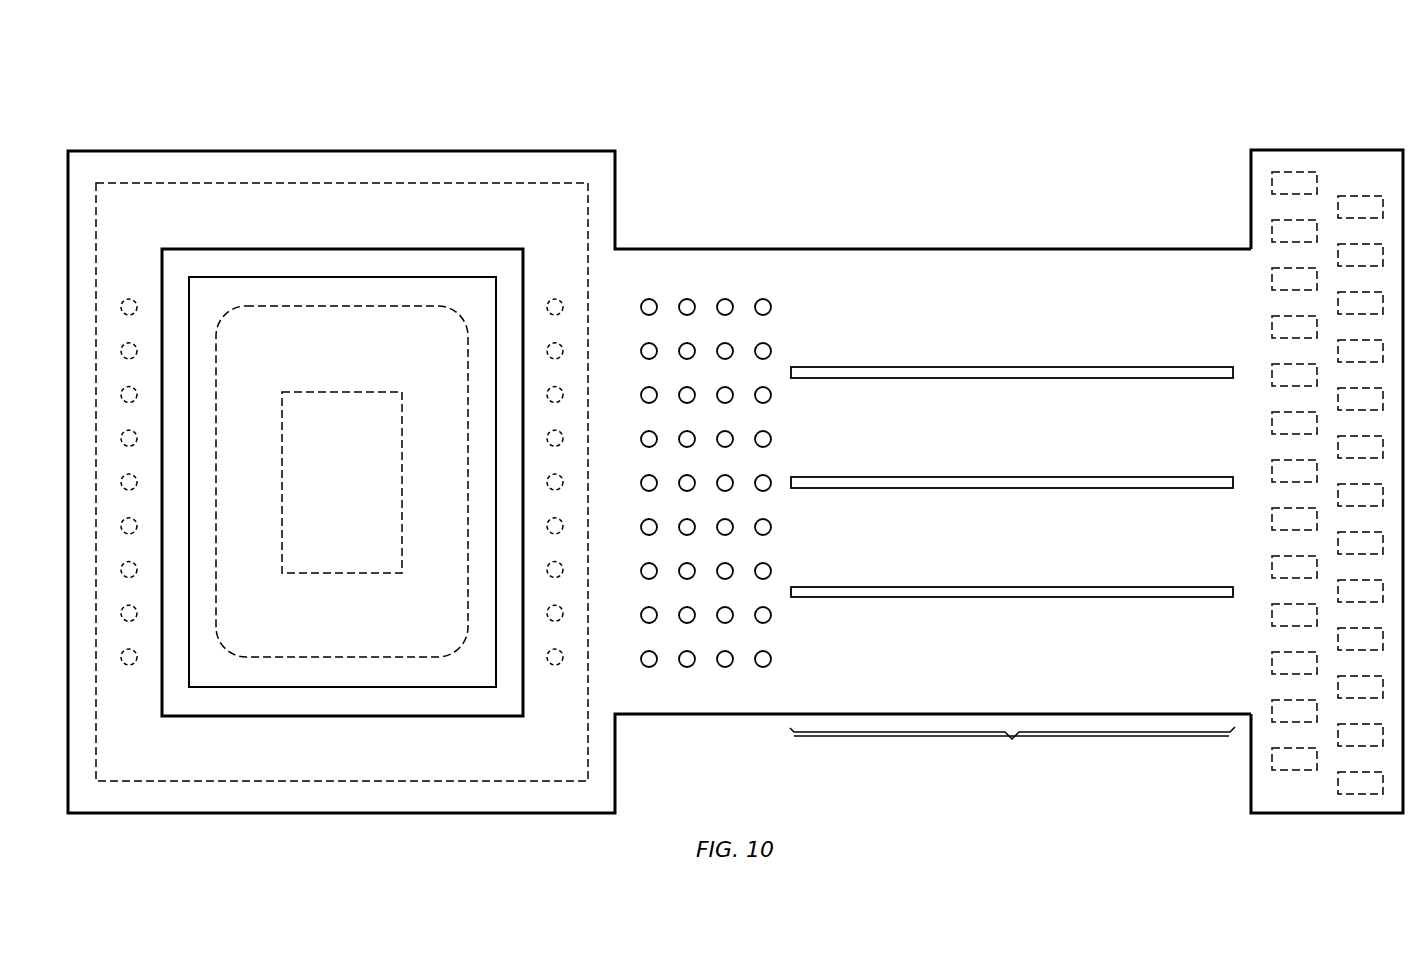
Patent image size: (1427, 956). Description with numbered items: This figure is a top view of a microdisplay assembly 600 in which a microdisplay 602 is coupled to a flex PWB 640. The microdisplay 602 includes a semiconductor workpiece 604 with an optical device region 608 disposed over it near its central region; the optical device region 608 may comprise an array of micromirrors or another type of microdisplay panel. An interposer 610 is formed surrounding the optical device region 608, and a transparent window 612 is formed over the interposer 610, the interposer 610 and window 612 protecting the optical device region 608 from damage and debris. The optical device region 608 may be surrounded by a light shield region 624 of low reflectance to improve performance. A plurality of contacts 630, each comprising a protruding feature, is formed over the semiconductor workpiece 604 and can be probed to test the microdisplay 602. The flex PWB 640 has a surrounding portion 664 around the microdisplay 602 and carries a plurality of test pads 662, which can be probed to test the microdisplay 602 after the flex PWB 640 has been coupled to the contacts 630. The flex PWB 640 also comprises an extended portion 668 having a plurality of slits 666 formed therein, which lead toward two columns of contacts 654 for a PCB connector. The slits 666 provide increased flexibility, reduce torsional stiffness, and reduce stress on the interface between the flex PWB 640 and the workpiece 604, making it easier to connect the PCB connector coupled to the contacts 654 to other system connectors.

The microdisplay assembly 600 is at (156, 84).
The microdisplay 602 is at (272, 134).
The semiconductor workpiece 604 is at (588, 300).
The optical device region 608 is at (343, 403).
The interposer 610 is at (342, 446).
The transparent window 612 is at (314, 285).
The light shield region 624 is at (275, 640).
The contacts 630 is at (130, 307).
The flex PWB 640 is at (1375, 134).
The contacts 654 is at (1290, 183).
The test pads 662 is at (763, 307).
The surrounding portion 664 is at (430, 160).
The slits 666 is at (1013, 373).
The extended portion 668 is at (1012, 749).